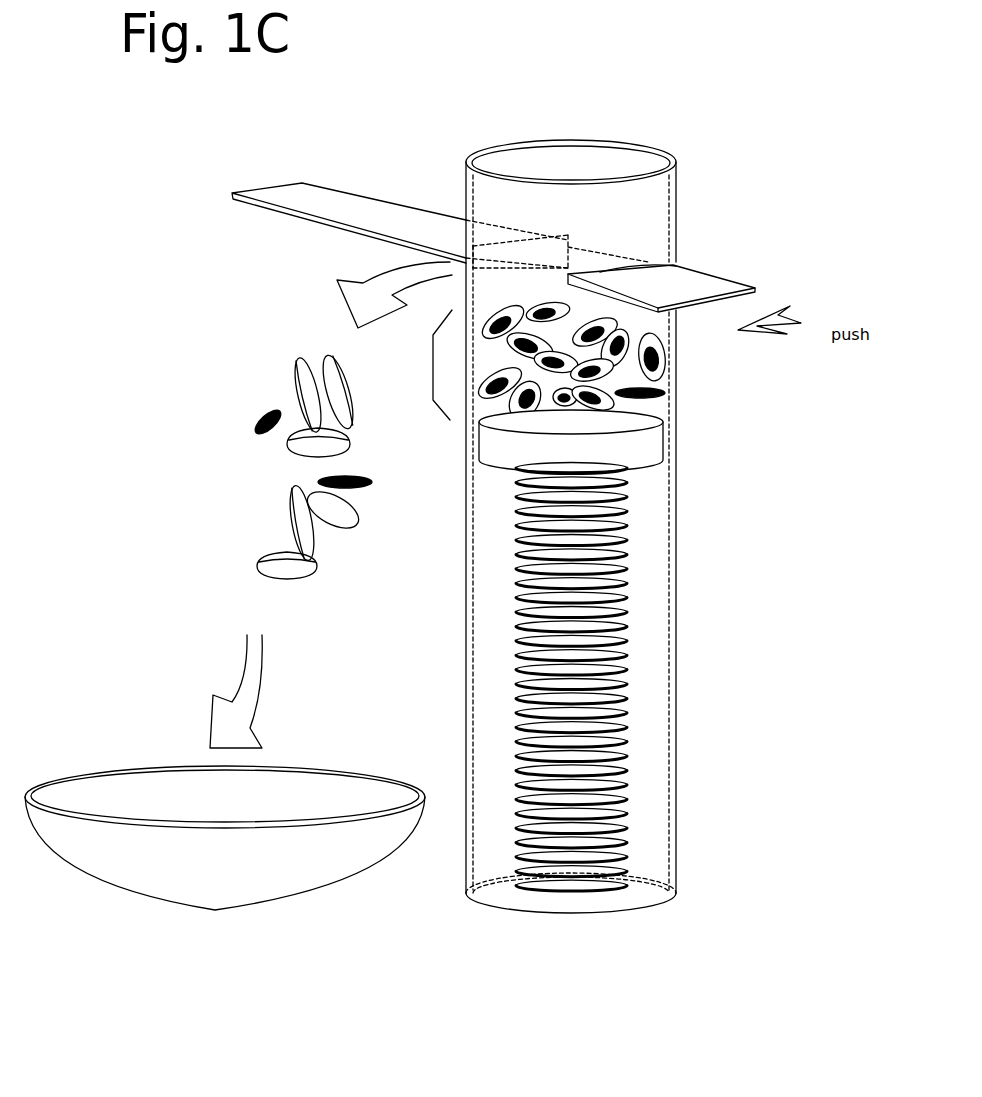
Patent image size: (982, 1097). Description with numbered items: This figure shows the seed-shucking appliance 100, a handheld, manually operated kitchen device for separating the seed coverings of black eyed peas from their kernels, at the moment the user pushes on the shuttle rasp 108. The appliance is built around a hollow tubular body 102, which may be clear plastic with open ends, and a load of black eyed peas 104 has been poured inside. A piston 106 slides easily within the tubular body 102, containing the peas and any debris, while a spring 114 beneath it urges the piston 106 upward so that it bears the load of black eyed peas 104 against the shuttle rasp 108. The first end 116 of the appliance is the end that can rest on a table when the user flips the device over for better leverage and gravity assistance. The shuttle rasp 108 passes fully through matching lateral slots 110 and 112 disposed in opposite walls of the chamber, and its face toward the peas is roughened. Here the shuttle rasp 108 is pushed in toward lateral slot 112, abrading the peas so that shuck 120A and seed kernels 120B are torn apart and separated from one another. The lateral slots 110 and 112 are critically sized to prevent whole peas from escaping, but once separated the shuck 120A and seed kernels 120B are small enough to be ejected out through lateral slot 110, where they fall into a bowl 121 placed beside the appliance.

The seed-shucking appliance 100 is at (612, 84).
The tubular body 102 is at (466, 546).
The black eyed peas 104 is at (433, 366).
The piston 106 is at (591, 457).
The shuttle rasp 108 is at (314, 185).
The lateral slot 110 is at (510, 240).
The lateral slot 112 is at (648, 263).
The spring 114 is at (632, 683).
The first end 116 is at (622, 143).
The shuck 120A is at (305, 365).
The seed kernels 120B is at (262, 411).
The bowl 121 is at (320, 766).